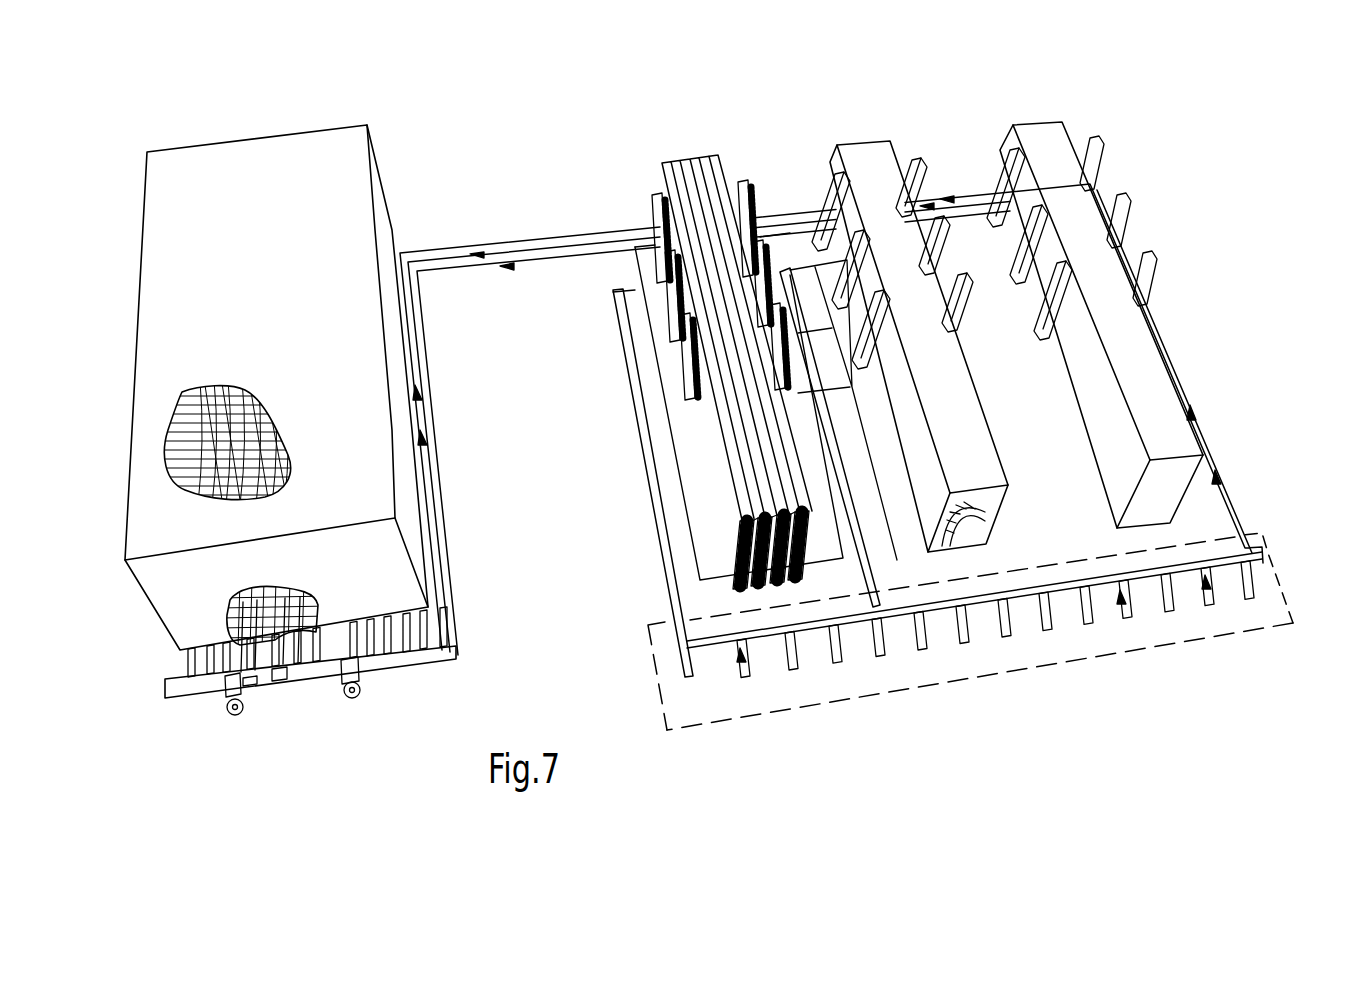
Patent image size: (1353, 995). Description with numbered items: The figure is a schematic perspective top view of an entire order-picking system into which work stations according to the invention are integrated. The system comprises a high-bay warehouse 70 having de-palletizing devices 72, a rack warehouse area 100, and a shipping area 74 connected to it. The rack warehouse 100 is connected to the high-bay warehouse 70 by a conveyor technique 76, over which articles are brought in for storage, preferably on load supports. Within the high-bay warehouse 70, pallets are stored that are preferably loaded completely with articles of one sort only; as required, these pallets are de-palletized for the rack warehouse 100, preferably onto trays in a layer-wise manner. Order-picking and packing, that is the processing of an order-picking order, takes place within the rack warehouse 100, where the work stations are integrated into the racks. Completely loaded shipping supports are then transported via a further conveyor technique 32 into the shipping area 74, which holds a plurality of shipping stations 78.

The high-bay warehouse 70 is at (313, 120).
The de-palletizing devices 72 is at (248, 724).
The shipping area 74 is at (658, 692).
The conveyor technique 76 is at (514, 276).
The shipping stations 78 is at (728, 675).
The conveyor technique 32 is at (636, 400).
The rack warehouse area 100 is at (869, 130).